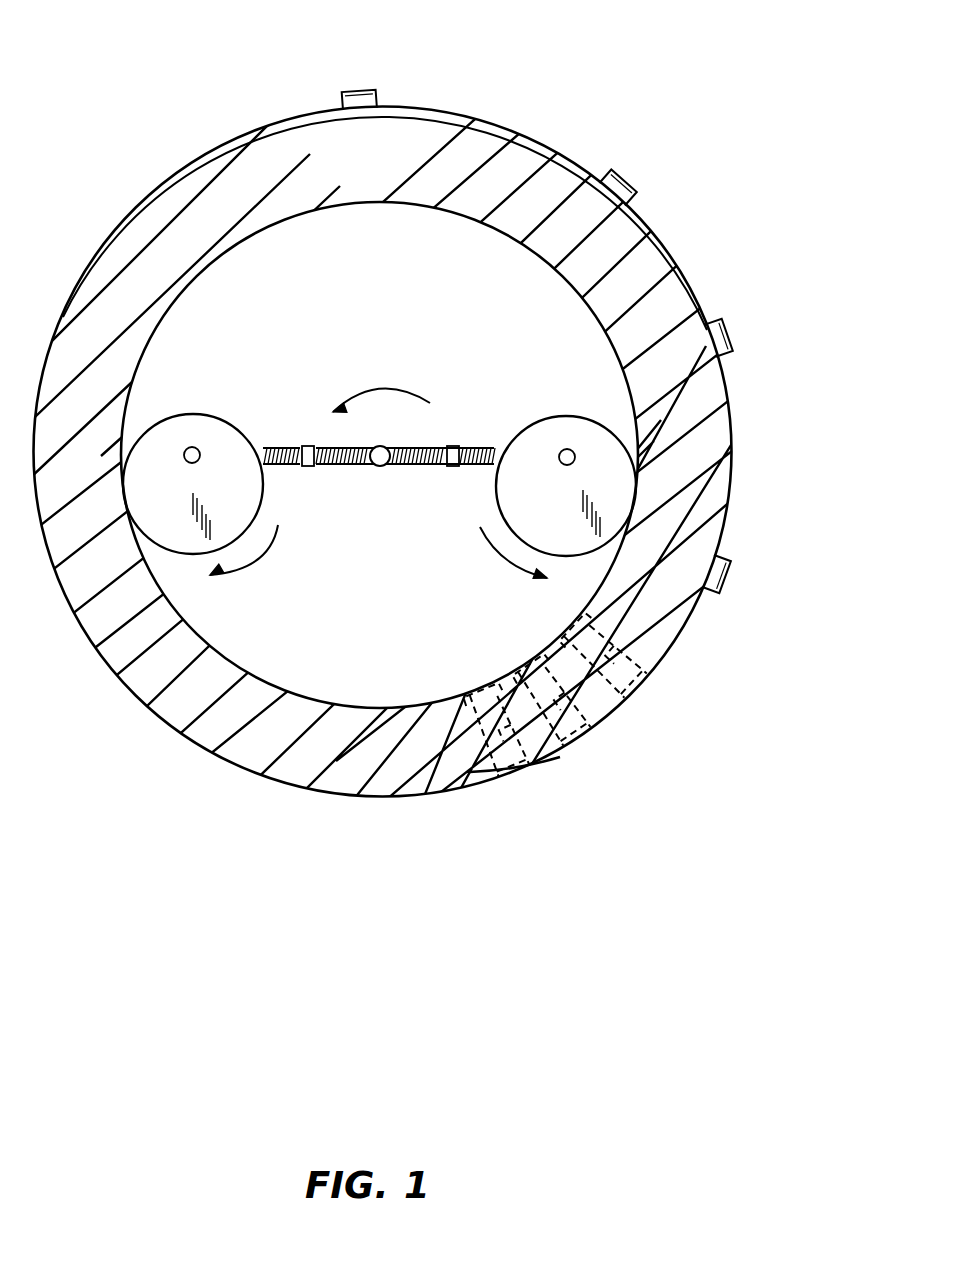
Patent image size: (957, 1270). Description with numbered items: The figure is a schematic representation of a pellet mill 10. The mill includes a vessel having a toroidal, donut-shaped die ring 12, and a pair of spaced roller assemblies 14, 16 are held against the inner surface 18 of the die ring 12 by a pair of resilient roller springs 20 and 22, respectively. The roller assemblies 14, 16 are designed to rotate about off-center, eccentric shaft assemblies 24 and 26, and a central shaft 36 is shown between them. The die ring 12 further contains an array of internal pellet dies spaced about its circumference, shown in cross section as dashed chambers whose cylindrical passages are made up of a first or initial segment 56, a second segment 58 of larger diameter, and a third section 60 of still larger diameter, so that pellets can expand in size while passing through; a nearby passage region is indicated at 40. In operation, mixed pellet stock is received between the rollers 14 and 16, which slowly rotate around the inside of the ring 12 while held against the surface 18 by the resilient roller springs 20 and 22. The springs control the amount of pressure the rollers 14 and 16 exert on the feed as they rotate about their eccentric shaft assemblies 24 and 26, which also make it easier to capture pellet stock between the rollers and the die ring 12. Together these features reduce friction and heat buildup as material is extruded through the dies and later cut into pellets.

The pellet mill 10 is at (512, 82).
The die ring 12 is at (680, 265).
The roller assembly 14 is at (193, 414).
The roller assembly 16 is at (568, 417).
The inner surface 18 is at (253, 680).
The resilient roller spring 20 is at (292, 466).
The resilient roller spring 22 is at (470, 466).
The eccentric shaft assembly 24 is at (200, 455).
The eccentric shaft assembly 26 is at (559, 457).
The central shaft 36 is at (384, 446).
The outlet passage 40 is at (533, 720).
The first segment 56 is at (473, 705).
The second segment 58 is at (485, 757).
The third section 60 is at (510, 772).